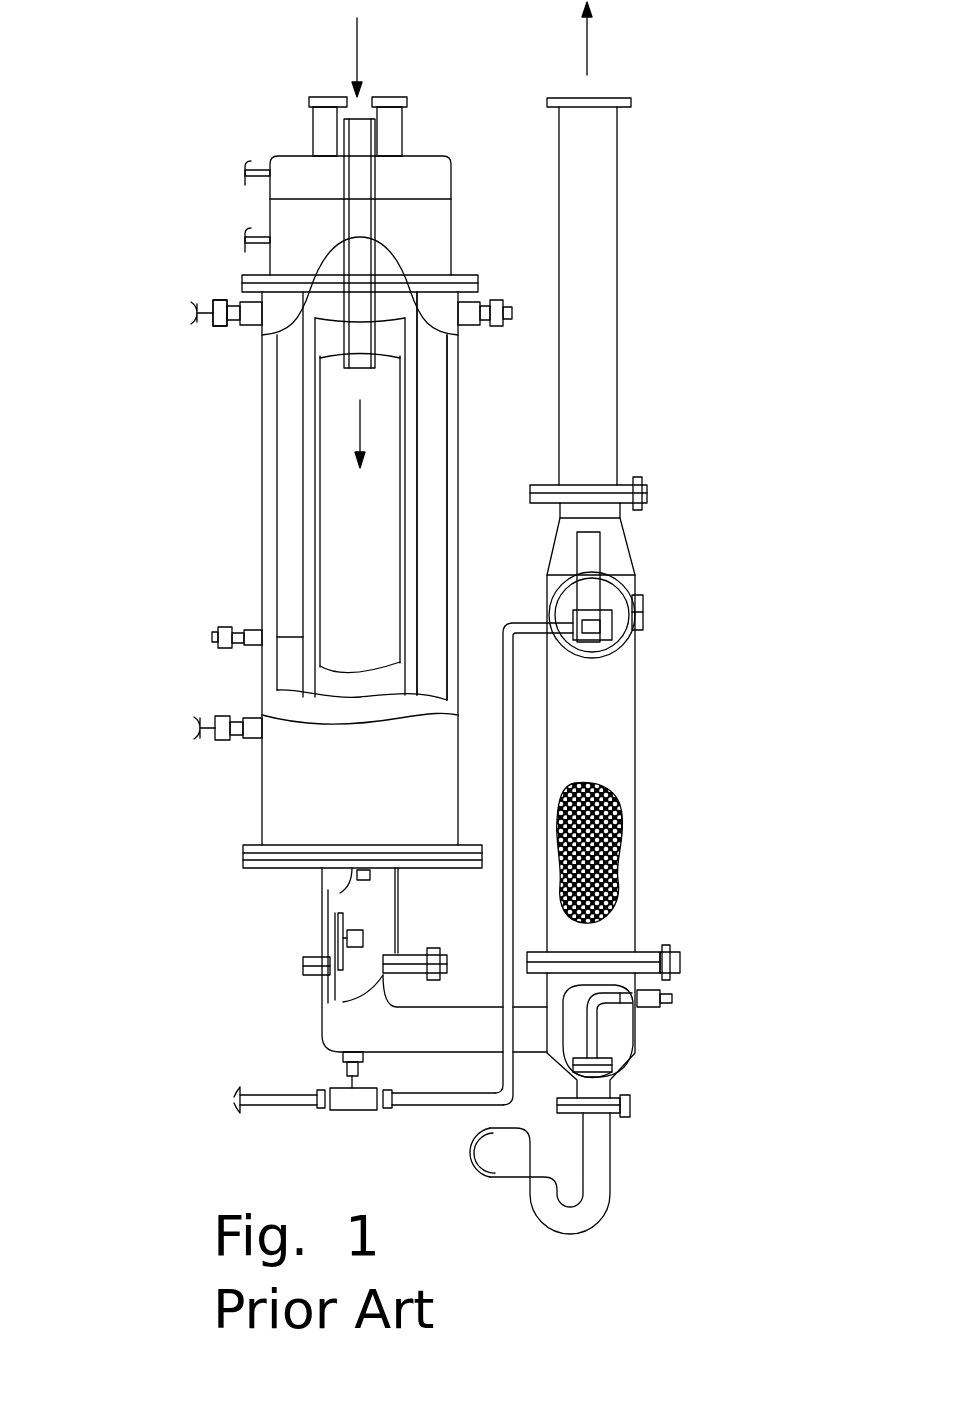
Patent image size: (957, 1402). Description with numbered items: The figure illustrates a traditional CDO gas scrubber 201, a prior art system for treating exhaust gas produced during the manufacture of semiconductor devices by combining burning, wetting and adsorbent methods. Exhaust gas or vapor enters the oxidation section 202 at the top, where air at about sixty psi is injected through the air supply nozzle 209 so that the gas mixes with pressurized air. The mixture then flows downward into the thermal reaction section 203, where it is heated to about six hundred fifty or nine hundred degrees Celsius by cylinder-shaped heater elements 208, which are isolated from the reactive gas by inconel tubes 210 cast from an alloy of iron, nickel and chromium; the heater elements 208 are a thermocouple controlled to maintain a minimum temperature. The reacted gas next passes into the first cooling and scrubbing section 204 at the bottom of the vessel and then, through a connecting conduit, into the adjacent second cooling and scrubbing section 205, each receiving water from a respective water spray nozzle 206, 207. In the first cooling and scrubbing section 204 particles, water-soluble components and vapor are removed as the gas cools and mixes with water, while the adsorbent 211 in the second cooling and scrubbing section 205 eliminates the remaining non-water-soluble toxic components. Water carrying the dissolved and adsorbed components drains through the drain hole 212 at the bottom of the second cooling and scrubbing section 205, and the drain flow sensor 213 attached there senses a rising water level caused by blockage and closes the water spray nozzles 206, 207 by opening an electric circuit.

The exhaust column / stack 201 is at (660, 220).
The oxidation section 202 is at (158, 155).
The thermal reaction section 203 is at (158, 288).
The first cooling and scrubbing section 204 is at (158, 860).
The second cooling and scrubbing section 205 is at (737, 493).
The water spray nozzle 206 is at (330, 982).
The water spray nozzle 207 is at (627, 607).
The heater elements 208 is at (433, 405).
The air supply nozzle 209 is at (200, 306).
The inconel tubes 210 is at (443, 472).
The adsorbent 211 is at (620, 863).
The drain hole 212 is at (528, 1177).
The drain flow sensor 213 is at (593, 1073).